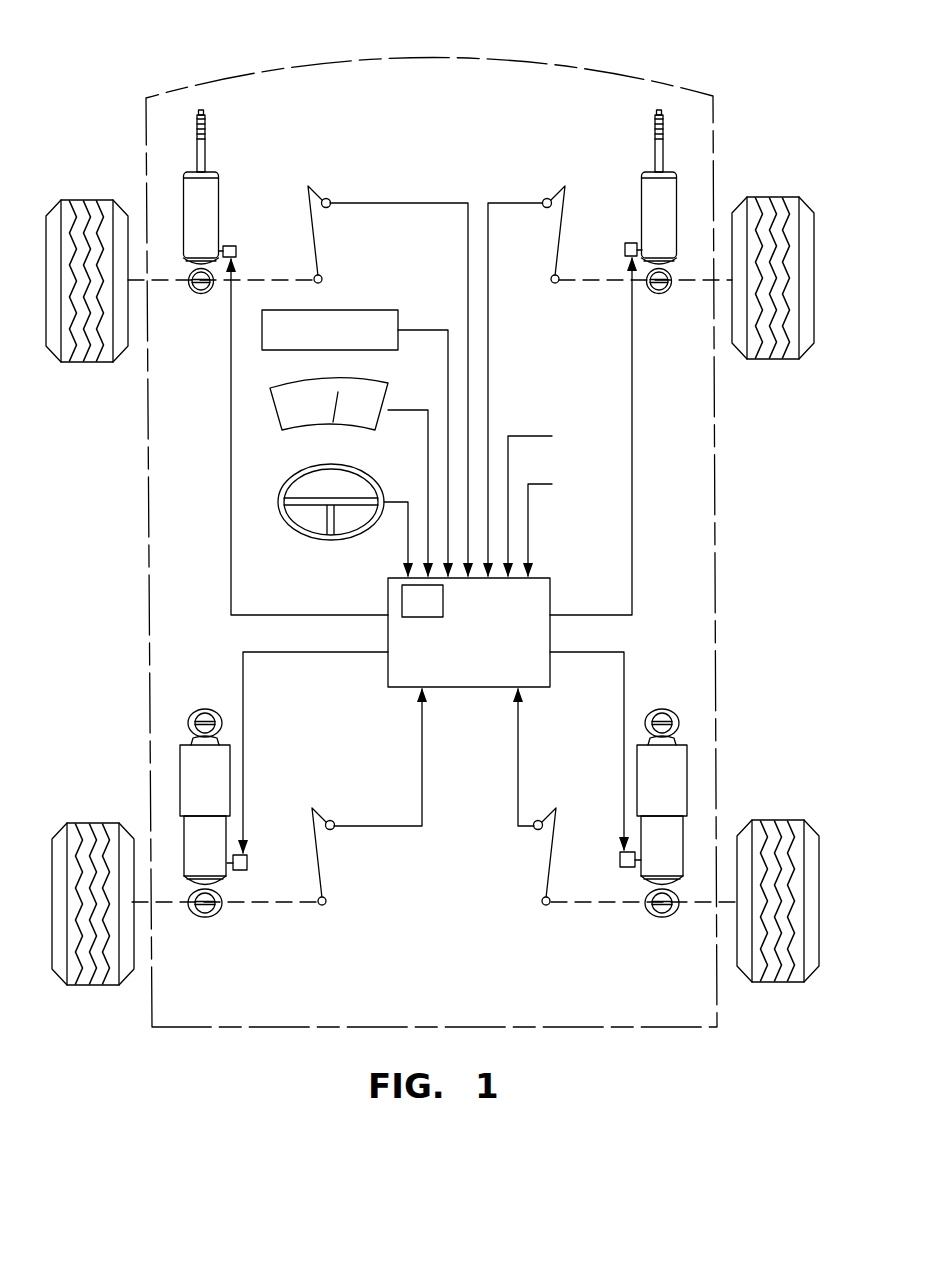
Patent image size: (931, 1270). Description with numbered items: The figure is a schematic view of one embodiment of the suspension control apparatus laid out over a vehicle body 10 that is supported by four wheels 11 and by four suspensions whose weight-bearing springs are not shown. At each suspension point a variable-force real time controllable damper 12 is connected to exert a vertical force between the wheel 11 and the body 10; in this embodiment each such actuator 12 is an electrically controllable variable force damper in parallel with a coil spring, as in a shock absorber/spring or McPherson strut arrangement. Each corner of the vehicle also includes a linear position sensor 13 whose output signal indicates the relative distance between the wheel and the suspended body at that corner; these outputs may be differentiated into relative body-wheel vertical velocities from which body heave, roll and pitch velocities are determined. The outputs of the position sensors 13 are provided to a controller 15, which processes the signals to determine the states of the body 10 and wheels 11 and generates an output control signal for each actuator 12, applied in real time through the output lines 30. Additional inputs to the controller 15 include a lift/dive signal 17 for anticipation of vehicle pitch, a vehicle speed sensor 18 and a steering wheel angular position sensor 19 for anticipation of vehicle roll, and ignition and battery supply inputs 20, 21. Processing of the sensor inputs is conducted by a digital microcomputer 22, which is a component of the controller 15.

The vehicle body 10 is at (199, 80).
The wheel 11 is at (95, 206).
The variable-force real time controllable damper 12 is at (212, 232).
The linear position sensor 13 is at (321, 238).
The controller 15 is at (538, 596).
The lift/dive anticipation input 17 is at (385, 310).
The vehicle speed sensor 18 is at (368, 392).
The steering wheel angular position sensor 19 is at (280, 494).
The ignition voltage input 20 is at (528, 433).
The battery voltage input 21 is at (528, 498).
The digital microcomputer 22 is at (402, 603).
The actuator control lines 30 is at (257, 653).